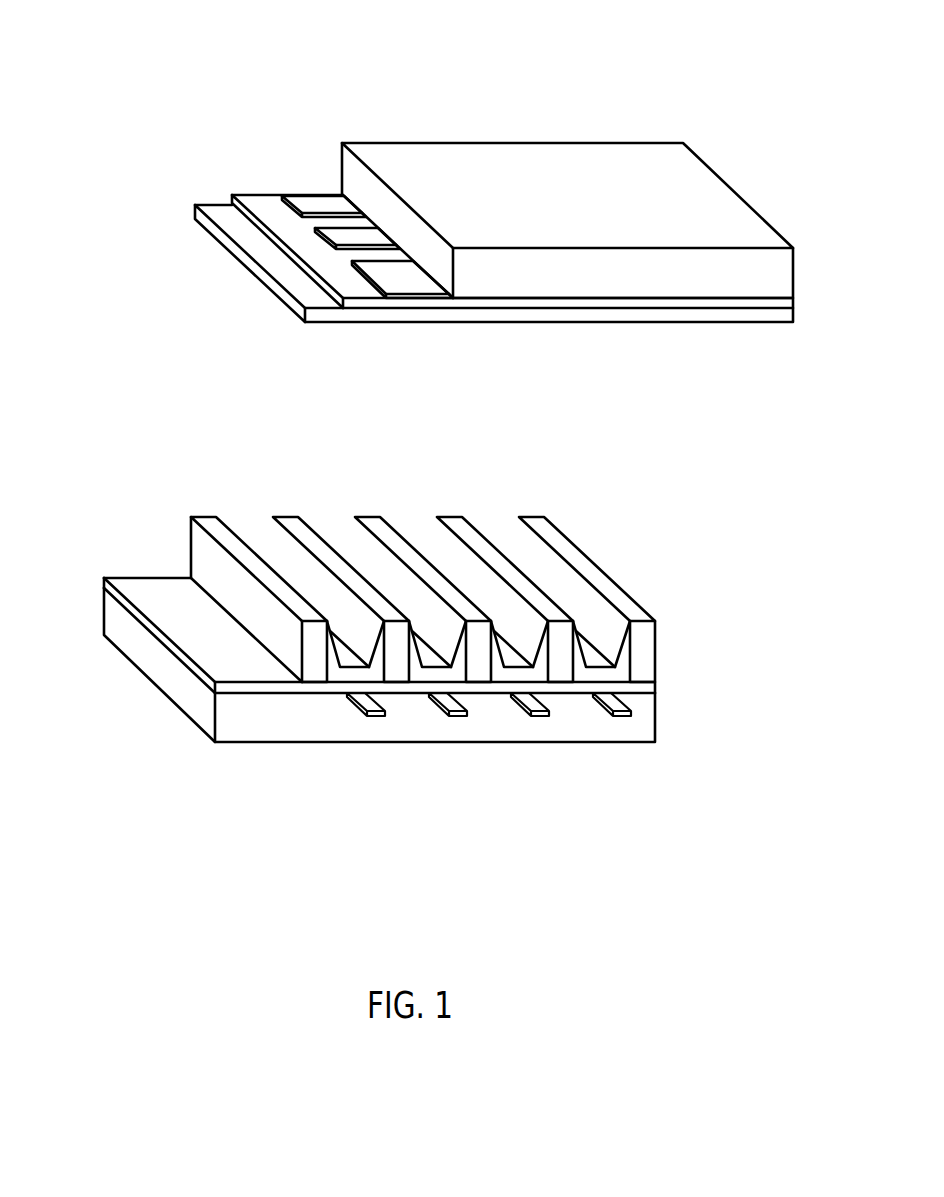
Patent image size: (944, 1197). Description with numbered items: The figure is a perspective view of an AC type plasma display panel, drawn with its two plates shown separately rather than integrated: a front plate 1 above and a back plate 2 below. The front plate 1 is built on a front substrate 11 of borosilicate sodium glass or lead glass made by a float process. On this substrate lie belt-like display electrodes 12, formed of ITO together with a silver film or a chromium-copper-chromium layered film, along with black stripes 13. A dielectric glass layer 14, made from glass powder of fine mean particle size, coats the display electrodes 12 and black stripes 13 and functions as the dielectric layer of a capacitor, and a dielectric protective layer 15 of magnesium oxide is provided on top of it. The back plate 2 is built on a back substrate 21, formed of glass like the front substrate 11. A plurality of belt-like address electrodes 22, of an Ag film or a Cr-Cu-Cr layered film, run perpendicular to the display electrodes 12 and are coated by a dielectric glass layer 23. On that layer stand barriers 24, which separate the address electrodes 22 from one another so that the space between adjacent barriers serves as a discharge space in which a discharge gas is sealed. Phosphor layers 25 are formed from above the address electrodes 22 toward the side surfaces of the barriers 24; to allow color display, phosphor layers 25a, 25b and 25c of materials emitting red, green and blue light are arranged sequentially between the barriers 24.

The front plate 1 is at (500, 118).
The front substrate 11 is at (720, 197).
The display electrodes 12 is at (322, 201).
The black stripes 13 is at (408, 284).
The dielectric glass layer 14 is at (268, 198).
The dielectric protective layer 15 is at (268, 258).
The back plate 2 is at (160, 744).
The back substrate 21 is at (116, 624).
The address electrodes 22 is at (362, 702).
The dielectric glass layer 23 is at (150, 584).
The barriers 24 is at (198, 545).
The phosphor layers 25 is at (511, 438).
The phosphor layer 25a is at (330, 597).
The phosphor layer 25b is at (387, 578).
The phosphor layer 25c is at (463, 572).